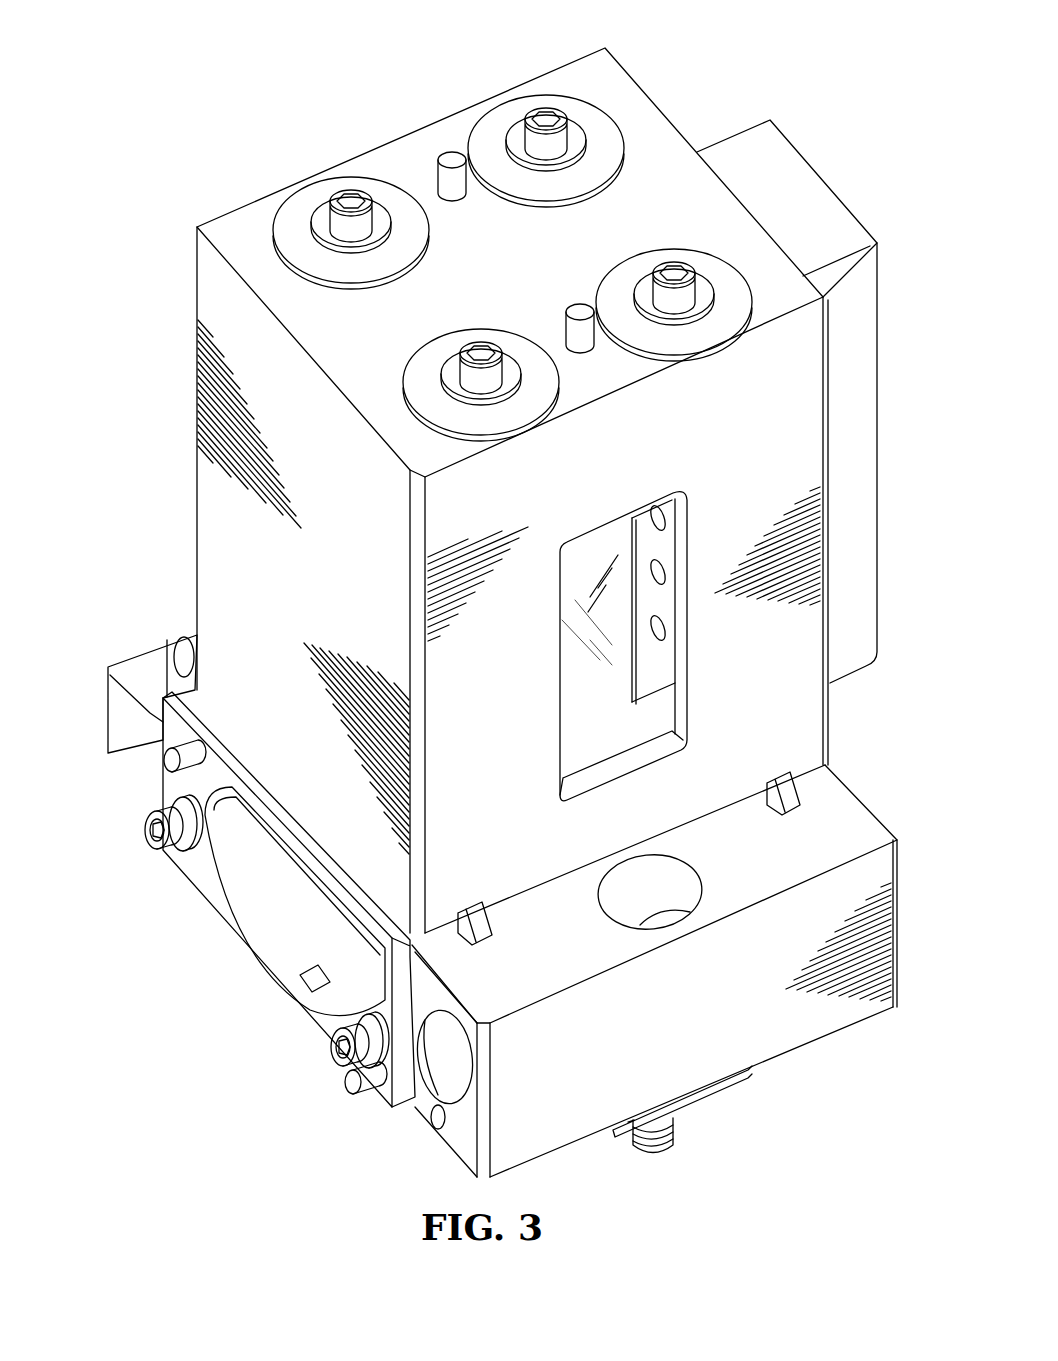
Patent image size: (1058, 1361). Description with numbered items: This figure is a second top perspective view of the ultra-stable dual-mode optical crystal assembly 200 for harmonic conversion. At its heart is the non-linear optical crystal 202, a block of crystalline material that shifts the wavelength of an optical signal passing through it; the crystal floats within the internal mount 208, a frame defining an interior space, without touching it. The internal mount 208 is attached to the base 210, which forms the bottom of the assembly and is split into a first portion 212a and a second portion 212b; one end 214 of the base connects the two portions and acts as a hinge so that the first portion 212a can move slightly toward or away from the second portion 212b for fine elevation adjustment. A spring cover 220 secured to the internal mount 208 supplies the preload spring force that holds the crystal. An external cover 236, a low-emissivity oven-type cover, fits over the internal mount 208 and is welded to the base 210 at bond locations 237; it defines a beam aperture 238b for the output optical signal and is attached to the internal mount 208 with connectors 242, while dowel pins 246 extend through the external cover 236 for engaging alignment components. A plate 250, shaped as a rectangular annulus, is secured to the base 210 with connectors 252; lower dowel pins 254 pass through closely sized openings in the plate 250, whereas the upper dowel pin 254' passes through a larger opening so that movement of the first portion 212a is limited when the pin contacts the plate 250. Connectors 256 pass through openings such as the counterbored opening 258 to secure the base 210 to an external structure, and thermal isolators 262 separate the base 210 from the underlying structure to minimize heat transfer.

The optical crystal assembly 200 is at (383, 72).
The non-linear optical crystal 202 is at (598, 552).
The internal mount 208 is at (575, 755).
The base 210 is at (884, 791).
The first portion of the base 212a is at (450, 1012).
The second portion of the base 212b is at (138, 665).
The end of the base 214 is at (493, 1100).
The spring cover 220 is at (878, 347).
The external cover 236 is at (832, 706).
The bond locations 237 is at (778, 775).
The beam aperture 238b is at (686, 640).
The connectors 242 is at (637, 272).
The dowel pins 246 is at (432, 182).
The plate 250 is at (258, 925).
The connectors 252 is at (334, 1056).
The lower dowel pins 254 is at (349, 1106).
The upper dowel pin 254' is at (122, 760).
The connectors 256 is at (657, 1160).
The opening 258 is at (628, 885).
The thermal isolators 262 is at (712, 1095).